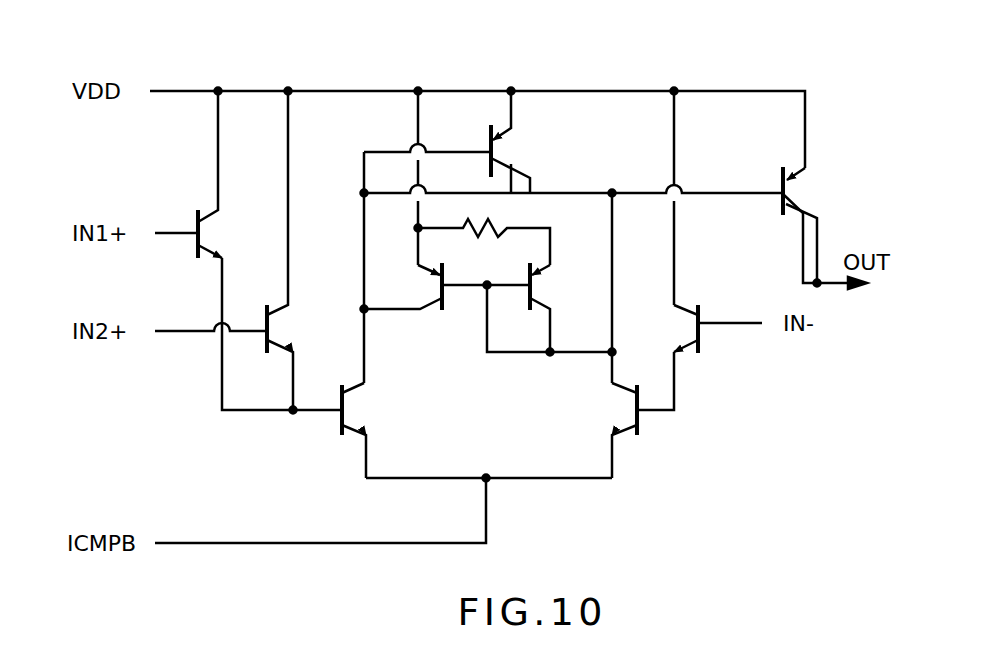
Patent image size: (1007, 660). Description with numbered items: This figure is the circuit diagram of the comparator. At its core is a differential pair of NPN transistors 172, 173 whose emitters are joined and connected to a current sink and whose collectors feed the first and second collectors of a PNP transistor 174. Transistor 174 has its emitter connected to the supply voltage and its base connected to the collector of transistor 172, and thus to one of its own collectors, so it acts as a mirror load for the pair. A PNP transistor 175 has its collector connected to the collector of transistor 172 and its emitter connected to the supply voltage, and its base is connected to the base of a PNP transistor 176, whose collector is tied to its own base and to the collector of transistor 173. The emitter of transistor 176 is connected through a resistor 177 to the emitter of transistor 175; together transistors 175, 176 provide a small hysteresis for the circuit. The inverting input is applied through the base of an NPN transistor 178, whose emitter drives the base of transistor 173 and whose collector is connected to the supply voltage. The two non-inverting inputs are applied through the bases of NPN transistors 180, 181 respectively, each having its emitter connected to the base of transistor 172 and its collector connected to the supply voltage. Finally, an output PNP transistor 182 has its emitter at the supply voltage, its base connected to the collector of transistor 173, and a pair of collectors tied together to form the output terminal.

The NPN transistor 172 is at (347, 403).
The NPN transistor 173 is at (632, 400).
The PNP transistor 174 is at (496, 150).
The PNP transistor 175 is at (440, 298).
The PNP transistor 176 is at (535, 282).
The resistor 177 is at (490, 226).
The NPN transistor 178 is at (702, 308).
The NPN transistor 180 is at (203, 238).
The NPN transistor 181 is at (272, 325).
The output PNP transistor 182 is at (790, 182).